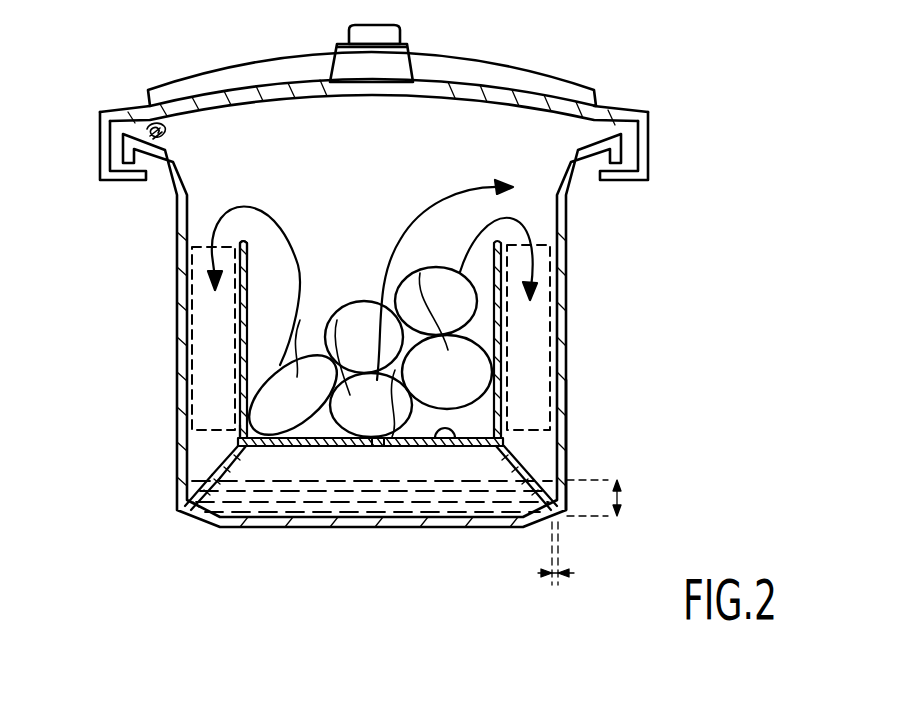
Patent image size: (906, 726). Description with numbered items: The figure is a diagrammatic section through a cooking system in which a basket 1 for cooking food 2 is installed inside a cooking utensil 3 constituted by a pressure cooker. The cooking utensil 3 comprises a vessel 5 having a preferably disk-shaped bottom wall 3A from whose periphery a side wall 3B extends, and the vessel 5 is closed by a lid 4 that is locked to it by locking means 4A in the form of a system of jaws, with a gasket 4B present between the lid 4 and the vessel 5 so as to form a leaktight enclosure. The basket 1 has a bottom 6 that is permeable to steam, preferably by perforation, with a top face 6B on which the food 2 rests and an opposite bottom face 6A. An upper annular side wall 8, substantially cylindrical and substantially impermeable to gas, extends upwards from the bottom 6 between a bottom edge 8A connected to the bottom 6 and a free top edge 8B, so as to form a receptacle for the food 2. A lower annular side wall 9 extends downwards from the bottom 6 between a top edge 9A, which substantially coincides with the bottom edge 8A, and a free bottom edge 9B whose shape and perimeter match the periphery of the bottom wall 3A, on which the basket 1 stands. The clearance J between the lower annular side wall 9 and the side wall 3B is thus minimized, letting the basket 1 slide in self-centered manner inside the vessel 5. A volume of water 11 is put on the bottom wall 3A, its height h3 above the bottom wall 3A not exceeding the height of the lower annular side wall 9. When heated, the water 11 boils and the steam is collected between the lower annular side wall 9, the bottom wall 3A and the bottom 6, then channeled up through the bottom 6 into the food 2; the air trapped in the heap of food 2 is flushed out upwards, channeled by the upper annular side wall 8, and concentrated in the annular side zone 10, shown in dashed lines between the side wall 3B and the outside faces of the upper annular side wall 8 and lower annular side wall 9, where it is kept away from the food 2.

The basket 1 is at (384, 363).
The food 2 is at (358, 318).
The cooking utensil 3 is at (389, 360).
The bottom wall 3A is at (478, 527).
The side wall 3B is at (570, 393).
The lid 4 is at (423, 98).
The locking means 4A is at (652, 137).
The gasket 4B is at (165, 133).
The vessel 5 is at (567, 425).
The bottom 6 is at (370, 507).
The bottom face 6A is at (378, 448).
The top face 6B is at (460, 452).
The upper annular side wall 8 is at (204, 303).
The bottom edge 8A is at (238, 438).
The free top edge 8B is at (246, 238).
The lower annular side wall 9 is at (528, 468).
The top edge 9A is at (252, 450).
The free bottom edge 9B is at (185, 506).
The annular side zone 10 is at (212, 316).
The water 11 is at (435, 497).
The height of water h3 is at (609, 500).
The clearance J is at (560, 553).